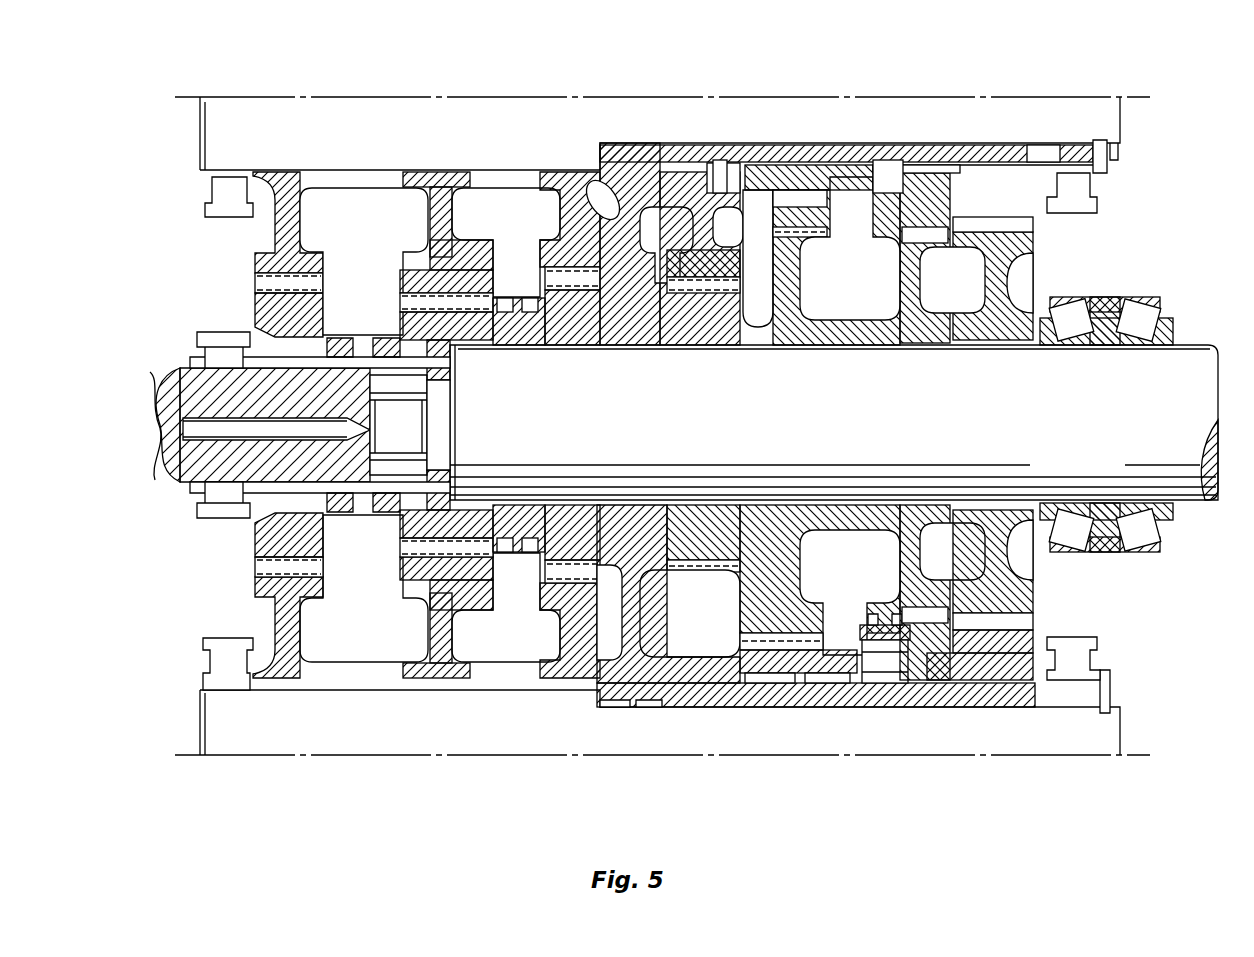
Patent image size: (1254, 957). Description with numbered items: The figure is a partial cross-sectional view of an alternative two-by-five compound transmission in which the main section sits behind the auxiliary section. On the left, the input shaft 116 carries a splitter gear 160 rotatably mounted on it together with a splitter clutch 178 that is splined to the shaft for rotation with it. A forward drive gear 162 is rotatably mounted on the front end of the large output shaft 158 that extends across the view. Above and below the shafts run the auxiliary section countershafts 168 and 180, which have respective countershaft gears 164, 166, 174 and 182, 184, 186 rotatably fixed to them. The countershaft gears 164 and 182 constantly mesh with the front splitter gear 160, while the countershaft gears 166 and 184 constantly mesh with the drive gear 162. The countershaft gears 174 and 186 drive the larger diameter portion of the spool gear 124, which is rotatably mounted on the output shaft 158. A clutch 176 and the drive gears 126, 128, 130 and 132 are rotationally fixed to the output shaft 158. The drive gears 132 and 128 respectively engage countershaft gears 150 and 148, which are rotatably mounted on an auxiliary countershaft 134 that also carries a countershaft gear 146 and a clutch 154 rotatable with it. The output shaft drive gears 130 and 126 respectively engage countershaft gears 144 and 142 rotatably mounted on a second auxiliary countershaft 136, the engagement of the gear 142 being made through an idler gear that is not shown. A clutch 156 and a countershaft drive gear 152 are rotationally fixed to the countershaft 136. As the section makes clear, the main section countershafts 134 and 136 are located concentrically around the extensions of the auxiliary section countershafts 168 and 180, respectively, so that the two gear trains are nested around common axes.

The input shaft 116 is at (168, 372).
The spool gear 124 is at (546, 258).
The drive gear 126 is at (1040, 246).
The drive gear 128 is at (900, 293).
The drive gear 130 is at (788, 272).
The drive gear 132 is at (696, 548).
The auxiliary countershaft 134 is at (790, 166).
The auxiliary countershaft 136 is at (842, 695).
The countershaft gear 142 is at (1025, 648).
The countershaft gear 144 is at (760, 642).
The countershaft gear 146 is at (603, 200).
The countershaft gear 148 is at (925, 148).
The countershaft gear 150 is at (690, 167).
The countershaft drive gear 152 is at (625, 640).
The clutch 154 is at (815, 182).
The clutch 156 is at (902, 672).
The output shaft 158 is at (1076, 446).
The splitter gear 160 is at (258, 302).
The forward drive gear 162 is at (398, 540).
The countershaft gear 164 is at (300, 227).
The countershaft gear 166 is at (430, 235).
The auxiliary section countershaft 168 is at (345, 99).
The countershaft gear 174 is at (506, 242).
The clutch 176 is at (497, 552).
The splitter clutch 178 is at (342, 338).
The auxiliary section countershaft 180 is at (662, 730).
The countershaft gear 182 is at (258, 596).
The countershaft gear 184 is at (428, 630).
The countershaft gear 186 is at (560, 630).